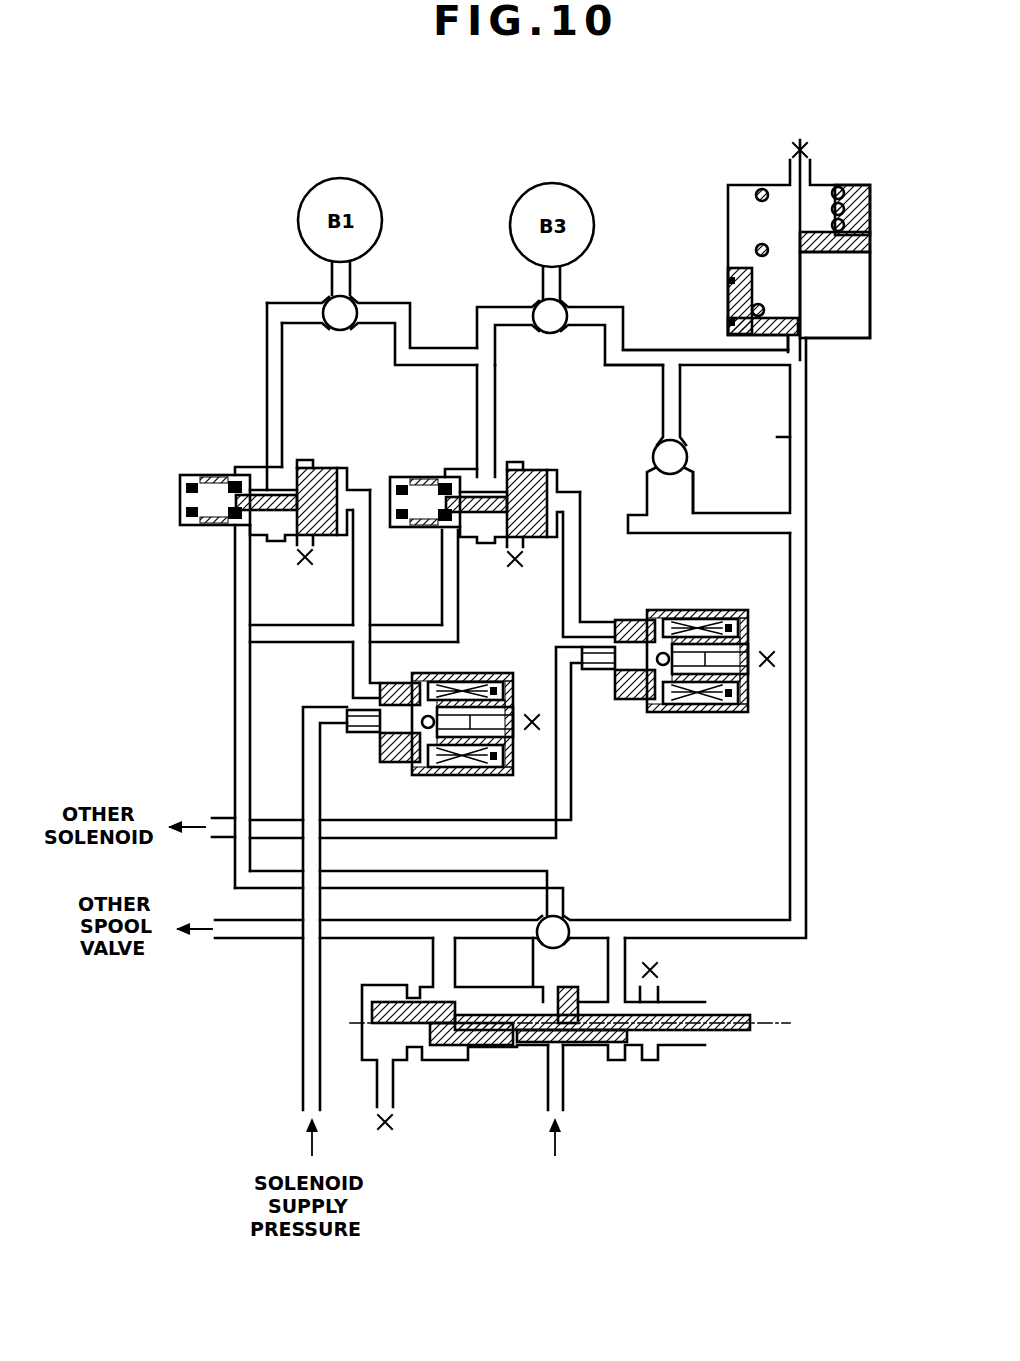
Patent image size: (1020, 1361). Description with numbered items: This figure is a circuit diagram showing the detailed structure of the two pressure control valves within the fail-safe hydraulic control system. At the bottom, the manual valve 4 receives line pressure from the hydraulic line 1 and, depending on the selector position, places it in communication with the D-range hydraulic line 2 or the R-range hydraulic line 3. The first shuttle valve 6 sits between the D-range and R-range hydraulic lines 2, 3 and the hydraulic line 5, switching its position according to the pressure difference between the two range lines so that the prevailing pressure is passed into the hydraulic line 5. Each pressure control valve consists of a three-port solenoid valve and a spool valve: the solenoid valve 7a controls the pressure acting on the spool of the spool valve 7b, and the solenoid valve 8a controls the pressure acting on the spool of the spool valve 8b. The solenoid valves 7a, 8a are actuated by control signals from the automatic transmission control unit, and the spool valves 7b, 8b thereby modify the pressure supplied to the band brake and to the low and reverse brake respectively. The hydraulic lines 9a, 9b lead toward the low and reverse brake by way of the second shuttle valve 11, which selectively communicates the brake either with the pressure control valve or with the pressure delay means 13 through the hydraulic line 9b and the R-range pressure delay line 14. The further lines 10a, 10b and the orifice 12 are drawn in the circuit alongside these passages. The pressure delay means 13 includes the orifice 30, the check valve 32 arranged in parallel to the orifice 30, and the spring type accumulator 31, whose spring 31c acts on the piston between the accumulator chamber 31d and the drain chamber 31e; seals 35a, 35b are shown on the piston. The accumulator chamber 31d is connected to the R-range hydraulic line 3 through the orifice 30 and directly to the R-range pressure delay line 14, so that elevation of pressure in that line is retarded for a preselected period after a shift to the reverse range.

The hydraulic line 1 is at (567, 1092).
The D-range hydraulic line 2 is at (432, 965).
The R-range hydraulic line 3 is at (635, 950).
The manual valve 4 is at (680, 1003).
The hydraulic line 5 is at (482, 872).
The first shuttle valve 6 is at (570, 915).
The three-port solenoid valve 7a is at (475, 673).
The spool valve 7b is at (330, 469).
The three-port solenoid valve 8a is at (682, 612).
The spool valve 8b is at (536, 474).
The hydraulic line 9a is at (267, 364).
The hydraulic line 9b is at (332, 280).
The passage 10a is at (477, 403).
The passage 10b is at (538, 283).
The second shuttle valve 11 is at (343, 330).
The orifice 12 is at (562, 303).
The pressure delay means 13 is at (789, 268).
The R-range pressure delay line 14 is at (644, 350).
The orifice 30 is at (808, 437).
The spring type accumulator 31 is at (796, 232).
The spring 31c is at (756, 197).
The accumulator chamber 31d is at (855, 306).
The drain chamber 31e is at (825, 194).
The check valve 32 is at (652, 441).
The seal 35a is at (740, 270).
The seal 35b is at (727, 322).